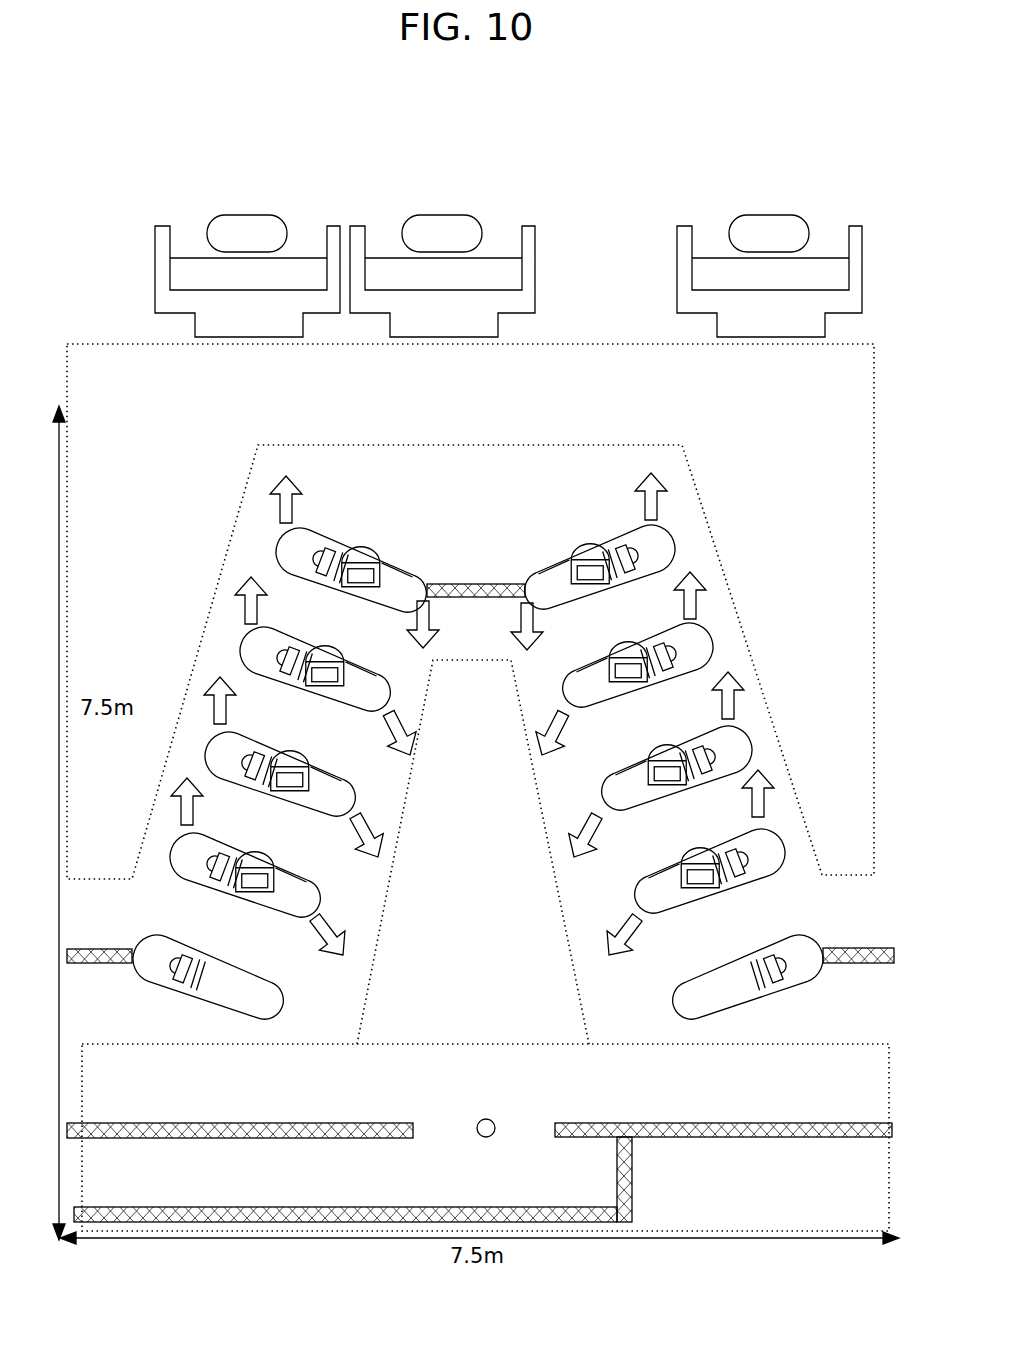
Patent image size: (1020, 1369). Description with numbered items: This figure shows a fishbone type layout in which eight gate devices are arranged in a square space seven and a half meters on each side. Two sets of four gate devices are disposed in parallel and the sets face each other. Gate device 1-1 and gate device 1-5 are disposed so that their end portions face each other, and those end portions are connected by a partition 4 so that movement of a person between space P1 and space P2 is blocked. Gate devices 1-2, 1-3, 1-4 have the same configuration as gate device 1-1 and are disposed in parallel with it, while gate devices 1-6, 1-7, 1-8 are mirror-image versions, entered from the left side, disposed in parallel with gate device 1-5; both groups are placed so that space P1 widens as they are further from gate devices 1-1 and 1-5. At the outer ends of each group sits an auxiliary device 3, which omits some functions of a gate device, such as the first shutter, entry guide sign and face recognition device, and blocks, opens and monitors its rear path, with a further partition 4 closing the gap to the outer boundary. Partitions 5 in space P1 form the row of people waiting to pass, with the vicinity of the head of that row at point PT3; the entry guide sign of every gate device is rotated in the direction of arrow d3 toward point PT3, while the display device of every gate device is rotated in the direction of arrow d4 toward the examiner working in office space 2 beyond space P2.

The office space 2 is at (728, 200).
The partition 4 is at (471, 582).
The partition 5 is at (369, 1121).
The gate device 1-1 is at (391, 601).
The gate device 1-2 is at (356, 701).
The gate device 1-3 is at (322, 806).
The gate device 1-4 is at (292, 904).
The gate device 1-5 is at (558, 598).
The gate device 1-6 is at (598, 696).
The gate device 1-7 is at (634, 799).
The gate device 1-8 is at (664, 903).
The auxiliary device 3 is at (247, 1009).
The space P1 is at (853, 1042).
The space P2 is at (871, 758).
The point PT3 is at (482, 1113).
The arrow d3 is at (476, 781).
The arrow d4 is at (476, 649).